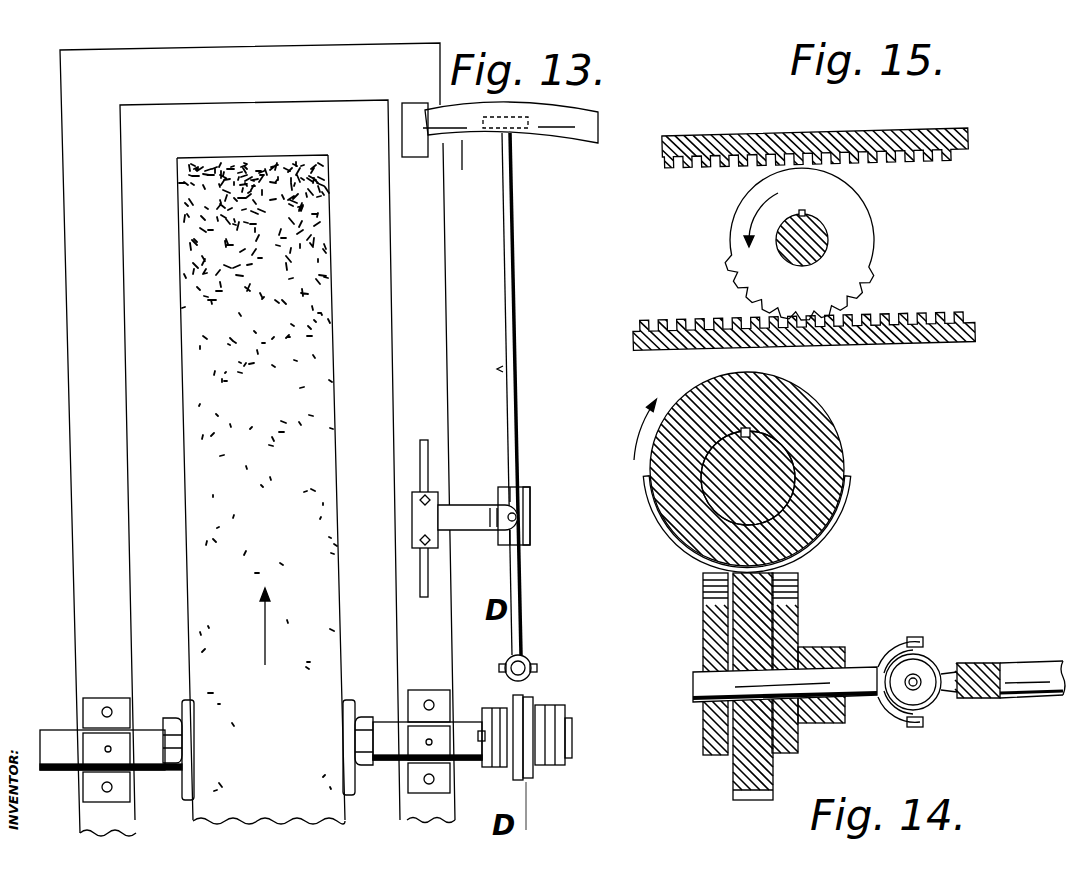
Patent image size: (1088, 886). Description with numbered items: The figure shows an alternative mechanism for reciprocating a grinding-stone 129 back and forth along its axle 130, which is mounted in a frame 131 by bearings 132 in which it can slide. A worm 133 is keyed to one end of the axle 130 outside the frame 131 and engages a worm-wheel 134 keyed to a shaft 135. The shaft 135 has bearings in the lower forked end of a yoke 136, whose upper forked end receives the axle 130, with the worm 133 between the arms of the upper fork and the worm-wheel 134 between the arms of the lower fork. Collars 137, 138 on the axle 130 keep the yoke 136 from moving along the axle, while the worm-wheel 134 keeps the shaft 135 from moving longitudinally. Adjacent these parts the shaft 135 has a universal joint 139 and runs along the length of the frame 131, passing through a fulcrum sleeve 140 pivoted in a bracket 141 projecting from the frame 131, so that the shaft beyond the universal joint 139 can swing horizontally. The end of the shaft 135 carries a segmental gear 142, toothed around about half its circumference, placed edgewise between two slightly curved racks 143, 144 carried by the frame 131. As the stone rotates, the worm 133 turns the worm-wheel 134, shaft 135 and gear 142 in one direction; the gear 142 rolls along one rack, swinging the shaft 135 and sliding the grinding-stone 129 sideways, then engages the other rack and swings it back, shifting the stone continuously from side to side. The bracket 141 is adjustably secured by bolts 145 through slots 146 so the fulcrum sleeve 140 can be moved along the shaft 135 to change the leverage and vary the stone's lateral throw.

In FIG. 13, the grinding-stone 129 is at (197, 512).
In FIG. 13, the axle 130 is at (63, 735).
In FIG. 13, the frame 131 is at (257, 439).
In FIG. 13, the bearings 132 is at (418, 712).
In FIG. 13, the worm 133 is at (530, 777).
In FIG. 14, the worm 133 is at (836, 432).
In FIG. 13, the worm-wheel 134 is at (573, 705).
In FIG. 14, the worm-wheel 134 is at (747, 795).
In FIG. 13, the shaft 135 is at (513, 402).
In FIG. 15, the shaft 135 is at (800, 244).
In FIG. 14, the shaft 135 is at (758, 498).
In FIG. 13, the yoke 136 is at (497, 773).
In FIG. 14, the yoke 136 is at (800, 612).
In FIG. 13, the collar 137 is at (487, 720).
In FIG. 13, the collar 138 is at (117, 743).
In FIG. 13, the universal joint 139 is at (531, 663).
In FIG. 14, the universal joint 139 is at (920, 667).
In FIG. 13, the fulcrum sleeve 140 is at (530, 497).
In FIG. 13, the bracket 141 is at (463, 517).
In FIG. 13, the segmental gear 142 is at (520, 140).
In FIG. 15, the segmental gear 142 is at (858, 227).
In FIG. 15, the rack 143 is at (715, 137).
In FIG. 13, the rack 144 is at (427, 143).
In FIG. 15, the rack 144 is at (770, 331).
In FIG. 13, the bolts 145 is at (422, 500).
In FIG. 13, the slots 146 is at (423, 453).